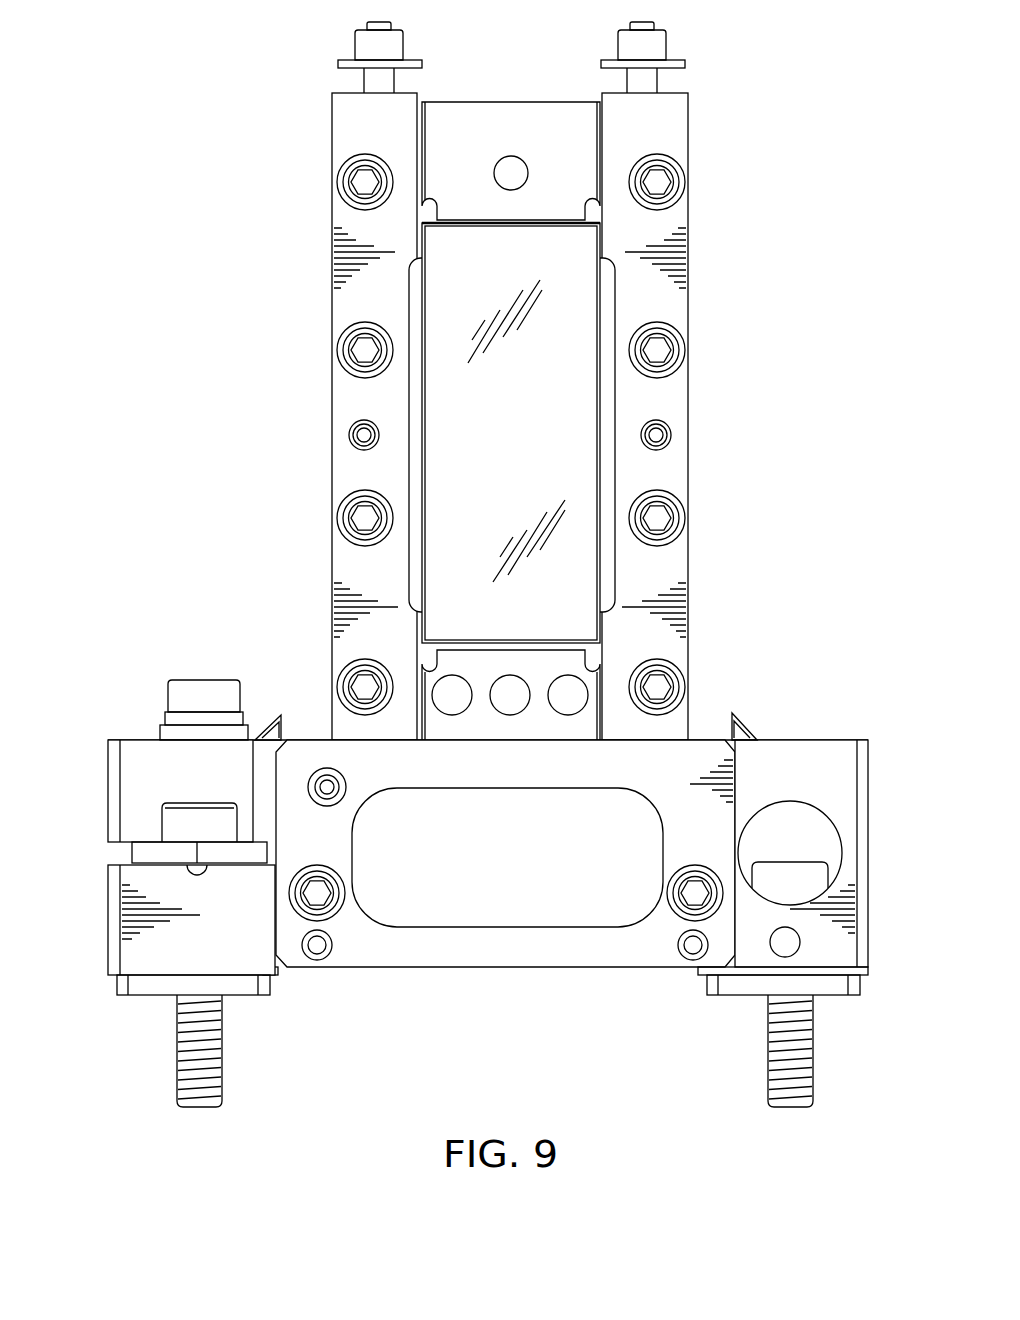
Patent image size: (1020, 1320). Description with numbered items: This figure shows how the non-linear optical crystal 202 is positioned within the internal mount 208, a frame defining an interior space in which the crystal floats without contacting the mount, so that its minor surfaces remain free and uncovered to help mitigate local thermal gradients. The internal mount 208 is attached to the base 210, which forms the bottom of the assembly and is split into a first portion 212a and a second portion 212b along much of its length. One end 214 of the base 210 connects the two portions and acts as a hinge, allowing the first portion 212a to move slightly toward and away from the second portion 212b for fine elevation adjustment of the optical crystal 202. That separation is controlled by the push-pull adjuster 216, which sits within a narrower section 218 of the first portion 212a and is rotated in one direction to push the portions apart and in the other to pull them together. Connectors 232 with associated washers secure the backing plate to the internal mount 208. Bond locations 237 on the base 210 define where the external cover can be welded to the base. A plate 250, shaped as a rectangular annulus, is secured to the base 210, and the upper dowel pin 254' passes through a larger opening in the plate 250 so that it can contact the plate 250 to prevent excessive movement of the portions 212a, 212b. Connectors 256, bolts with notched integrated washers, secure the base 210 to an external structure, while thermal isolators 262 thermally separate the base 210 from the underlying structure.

The non-linear optical crystal 202 is at (576, 384).
The internal mount 208 is at (514, 101).
The base 210 is at (842, 695).
The first portion of the base 212a is at (108, 795).
The second portion of the base 212b is at (108, 920).
The end of the base 214 is at (850, 856).
The push-pull adjuster 216 is at (169, 692).
The narrower section of the first portion 218 is at (137, 812).
The connectors 232 is at (338, 349).
The bond locations 237 is at (284, 727).
The plate 250 is at (409, 955).
The upper dowel pin 254' is at (377, 798).
The connectors 256 is at (790, 1108).
The thermal isolators 262 is at (835, 997).